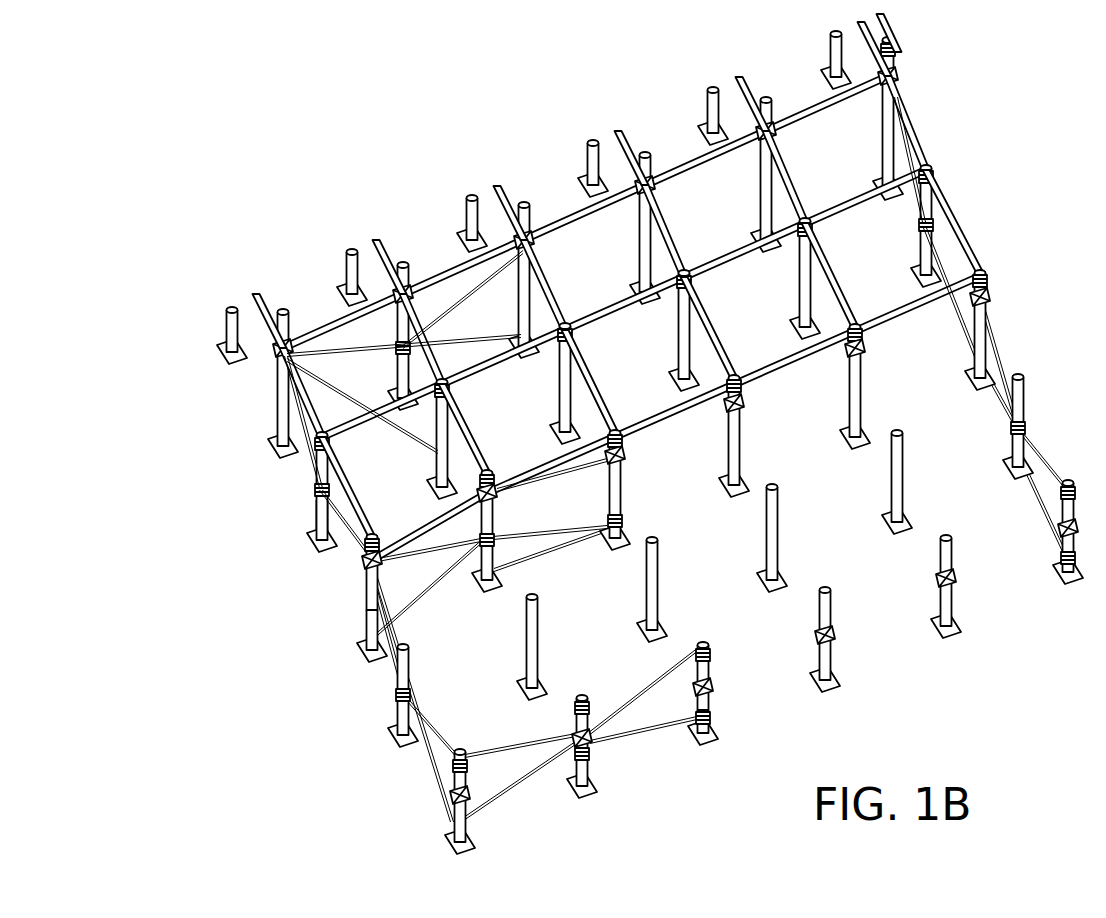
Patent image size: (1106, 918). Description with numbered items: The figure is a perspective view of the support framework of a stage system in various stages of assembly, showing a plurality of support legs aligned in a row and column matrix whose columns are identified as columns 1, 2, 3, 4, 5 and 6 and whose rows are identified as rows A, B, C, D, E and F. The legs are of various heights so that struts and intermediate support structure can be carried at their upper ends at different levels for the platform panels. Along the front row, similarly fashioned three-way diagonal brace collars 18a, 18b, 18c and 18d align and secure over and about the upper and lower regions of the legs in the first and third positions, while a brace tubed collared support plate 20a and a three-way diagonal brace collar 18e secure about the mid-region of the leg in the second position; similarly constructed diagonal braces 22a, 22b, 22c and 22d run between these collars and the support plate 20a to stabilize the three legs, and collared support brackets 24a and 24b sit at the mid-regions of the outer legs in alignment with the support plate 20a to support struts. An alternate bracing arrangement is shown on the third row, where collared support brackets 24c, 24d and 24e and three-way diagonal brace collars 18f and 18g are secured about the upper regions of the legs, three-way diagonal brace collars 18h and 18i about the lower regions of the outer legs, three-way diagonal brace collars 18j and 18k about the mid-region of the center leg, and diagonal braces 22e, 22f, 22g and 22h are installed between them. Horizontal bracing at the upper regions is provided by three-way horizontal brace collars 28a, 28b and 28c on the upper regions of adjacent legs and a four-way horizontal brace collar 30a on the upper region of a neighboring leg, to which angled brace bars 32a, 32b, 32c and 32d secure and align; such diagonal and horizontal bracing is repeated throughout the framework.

The 3-way diagonal brace collar 18a is at (452, 826).
The 3-way diagonal brace collar 18b is at (453, 762).
The 3-way diagonal brace collar 18c is at (706, 720).
The 3-way diagonal brace collar 18d is at (706, 652).
The 3-way diagonal brace collar 18e is at (573, 797).
The 3-way diagonal brace collar 18f is at (368, 588).
The 3-way diagonal brace collar 18g is at (606, 477).
The 3-way diagonal brace collar 18h is at (367, 634).
The 3-way diagonal brace collar 18i is at (620, 530).
The 3-way diagonal brace collar 18j is at (477, 531).
The 3-way diagonal brace collar 18k is at (493, 553).
The brace tubed collared support plate 20a is at (593, 757).
The diagonal brace 22a is at (475, 757).
The diagonal brace 22b is at (475, 818).
The diagonal brace 22c is at (652, 684).
The diagonal brace 22d is at (681, 724).
The diagonal brace 22e is at (407, 550).
The diagonal brace 22f is at (423, 593).
The diagonal brace 22g is at (543, 540).
The diagonal brace 22h is at (545, 528).
The collared support bracket 24a is at (468, 788).
The collared support bracket 24b is at (712, 683).
The collared support bracket 24c is at (375, 561).
The collared support bracket 24d is at (497, 497).
The collared support bracket 24e is at (620, 458).
The 3-way horizontal brace collar 28a is at (368, 550).
The 3-way horizontal brace collar 28b is at (488, 472).
The 3-way horizontal brace collar 28c is at (327, 442).
The 4-way horizontal brace collar 30a is at (446, 388).
The angled brace bar 32a is at (446, 488).
The angled brace bar 32b is at (458, 409).
The angled brace bar 32c is at (378, 410).
The angled brace bar 32d is at (318, 476).
The row A is at (437, 849).
The row B is at (386, 744).
The row C is at (342, 659).
The row D is at (300, 554).
The row E is at (262, 461).
The row F is at (214, 357).
The column 1 is at (439, 825).
The column 2 is at (591, 774).
The column 3 is at (728, 715).
The column 4 is at (835, 698).
The column 5 is at (953, 643).
The column 6 is at (1072, 595).